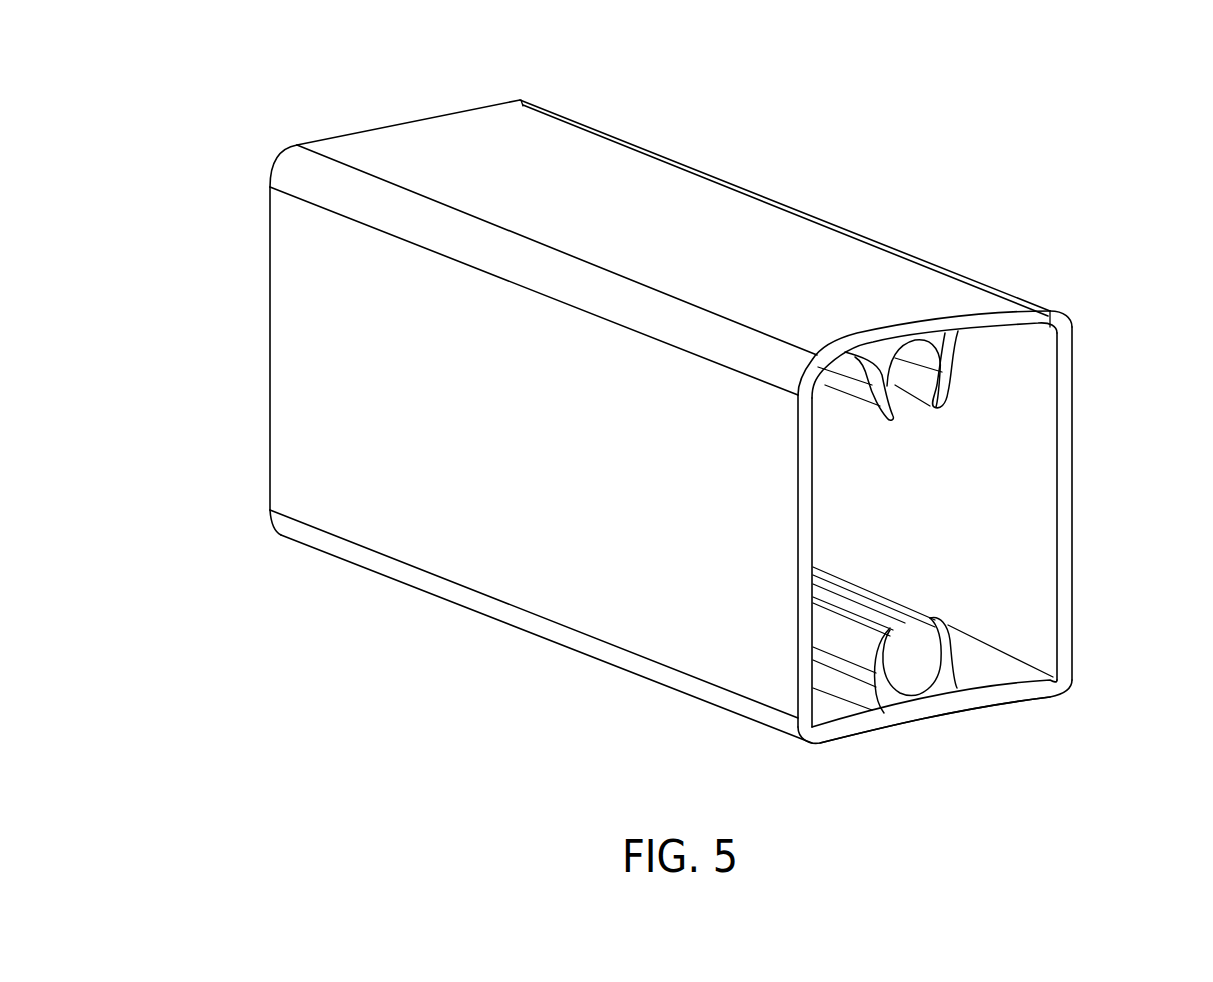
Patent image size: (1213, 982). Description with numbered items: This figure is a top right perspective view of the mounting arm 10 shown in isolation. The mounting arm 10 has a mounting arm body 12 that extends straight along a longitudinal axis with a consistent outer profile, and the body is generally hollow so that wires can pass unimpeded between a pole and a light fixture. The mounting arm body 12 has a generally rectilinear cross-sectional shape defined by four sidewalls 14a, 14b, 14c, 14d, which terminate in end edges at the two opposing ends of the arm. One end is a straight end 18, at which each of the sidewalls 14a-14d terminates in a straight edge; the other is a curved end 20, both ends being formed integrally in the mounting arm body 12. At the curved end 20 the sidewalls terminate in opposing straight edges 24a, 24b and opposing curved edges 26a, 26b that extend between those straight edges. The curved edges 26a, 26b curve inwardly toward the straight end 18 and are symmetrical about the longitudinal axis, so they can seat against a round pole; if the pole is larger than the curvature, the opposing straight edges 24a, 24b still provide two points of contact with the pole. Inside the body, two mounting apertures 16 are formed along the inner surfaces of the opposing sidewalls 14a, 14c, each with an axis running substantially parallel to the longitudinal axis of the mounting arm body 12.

The mounting arm 10 is at (295, 102).
The mounting arm body 12 is at (522, 103).
The sidewall 14a is at (720, 245).
The sidewall 14b is at (567, 475).
The sidewall 14c is at (1035, 700).
The sidewall 14d is at (995, 523).
The mounting aperture 16 is at (915, 395).
The straight end 18 is at (215, 323).
The curved end 20 is at (847, 762).
The straight edge 24a is at (805, 492).
The straight edge 24b is at (1072, 535).
The curved edge 26a is at (920, 330).
The curved edge 26b is at (918, 713).